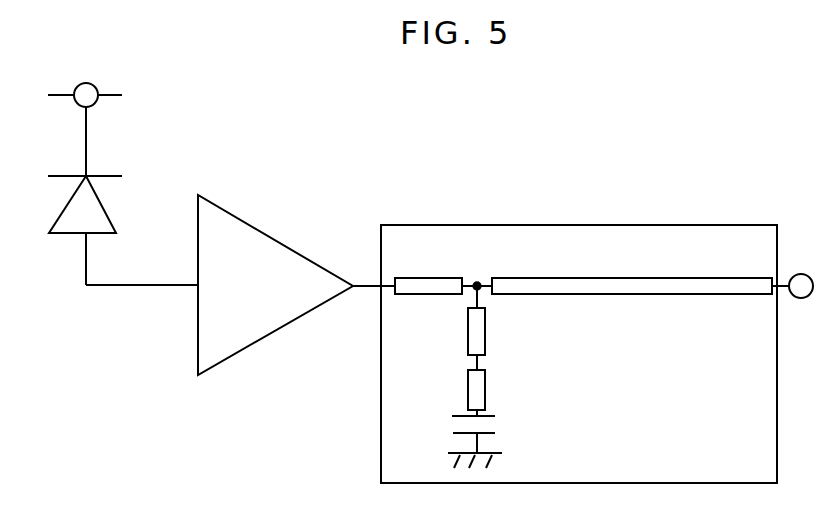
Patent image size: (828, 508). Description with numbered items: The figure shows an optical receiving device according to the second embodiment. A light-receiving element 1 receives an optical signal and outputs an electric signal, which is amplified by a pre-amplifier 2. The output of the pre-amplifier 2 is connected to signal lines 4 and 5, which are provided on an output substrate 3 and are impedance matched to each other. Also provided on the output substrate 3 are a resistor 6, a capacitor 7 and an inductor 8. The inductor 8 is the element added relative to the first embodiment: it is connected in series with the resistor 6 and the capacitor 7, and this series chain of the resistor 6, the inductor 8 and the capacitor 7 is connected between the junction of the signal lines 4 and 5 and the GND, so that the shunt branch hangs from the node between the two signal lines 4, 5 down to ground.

The light-receiving element 1 is at (67, 205).
The pre-amplifier 2 is at (277, 240).
The output substrate 3 is at (505, 225).
The signal line 4 is at (428, 278).
The signal line 5 is at (596, 278).
The resistor 6 is at (486, 325).
The capacitor 7 is at (488, 415).
The inductor 8 is at (486, 376).